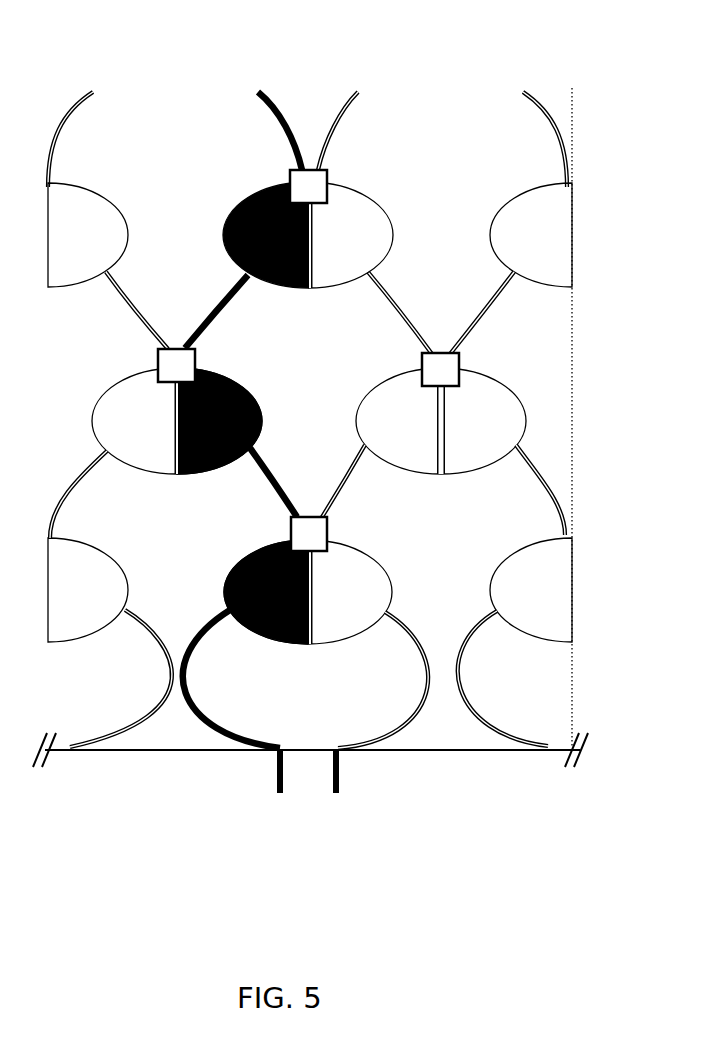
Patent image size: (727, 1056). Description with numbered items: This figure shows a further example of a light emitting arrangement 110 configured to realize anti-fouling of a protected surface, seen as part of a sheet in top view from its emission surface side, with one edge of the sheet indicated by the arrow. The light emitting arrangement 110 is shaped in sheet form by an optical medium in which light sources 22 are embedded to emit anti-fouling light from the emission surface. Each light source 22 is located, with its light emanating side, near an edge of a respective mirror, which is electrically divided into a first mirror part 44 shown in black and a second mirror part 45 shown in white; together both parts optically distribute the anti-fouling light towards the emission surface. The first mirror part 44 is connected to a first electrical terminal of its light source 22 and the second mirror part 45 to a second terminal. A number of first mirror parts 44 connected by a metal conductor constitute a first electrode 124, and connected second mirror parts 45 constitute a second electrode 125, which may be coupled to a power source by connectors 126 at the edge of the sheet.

The light source 22 is at (288, 170).
The first mirror part 44 is at (227, 215).
The second mirror part 45 is at (370, 197).
The light emitting arrangement 110 is at (486, 752).
The first electrode 124 is at (202, 715).
The second electrode 125 is at (405, 715).
The connectors 126 is at (277, 773).